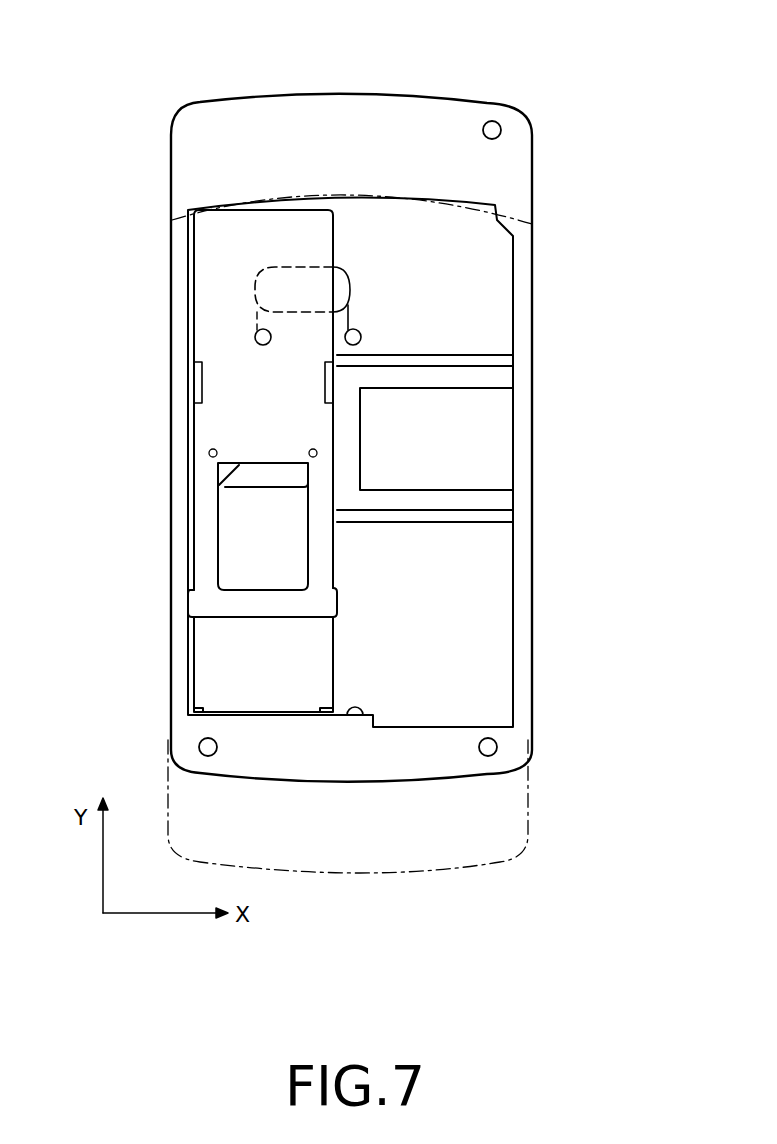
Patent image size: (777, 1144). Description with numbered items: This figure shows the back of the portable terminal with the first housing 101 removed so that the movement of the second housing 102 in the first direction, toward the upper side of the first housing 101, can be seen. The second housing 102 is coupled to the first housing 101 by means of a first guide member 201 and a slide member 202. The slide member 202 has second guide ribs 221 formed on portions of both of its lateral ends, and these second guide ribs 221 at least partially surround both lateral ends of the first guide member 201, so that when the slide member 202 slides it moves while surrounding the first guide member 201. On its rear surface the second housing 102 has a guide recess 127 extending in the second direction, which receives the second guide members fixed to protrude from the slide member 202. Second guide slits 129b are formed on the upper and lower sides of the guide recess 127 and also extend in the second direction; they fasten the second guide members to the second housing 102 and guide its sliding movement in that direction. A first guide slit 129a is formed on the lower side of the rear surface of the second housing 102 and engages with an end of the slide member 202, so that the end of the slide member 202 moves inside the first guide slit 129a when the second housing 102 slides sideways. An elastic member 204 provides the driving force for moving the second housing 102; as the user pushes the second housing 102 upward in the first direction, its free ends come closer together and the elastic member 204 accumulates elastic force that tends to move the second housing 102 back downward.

The first housing 101 is at (523, 817).
The second housing 102 is at (529, 157).
The guide recess 127 is at (347, 441).
The first guide slit 129a is at (362, 712).
The second guide slits 129b is at (452, 357).
The first guide member 201 is at (233, 303).
The slide member 202 is at (232, 657).
The elastic member 204 is at (294, 272).
The second guide ribs 221 is at (196, 381).